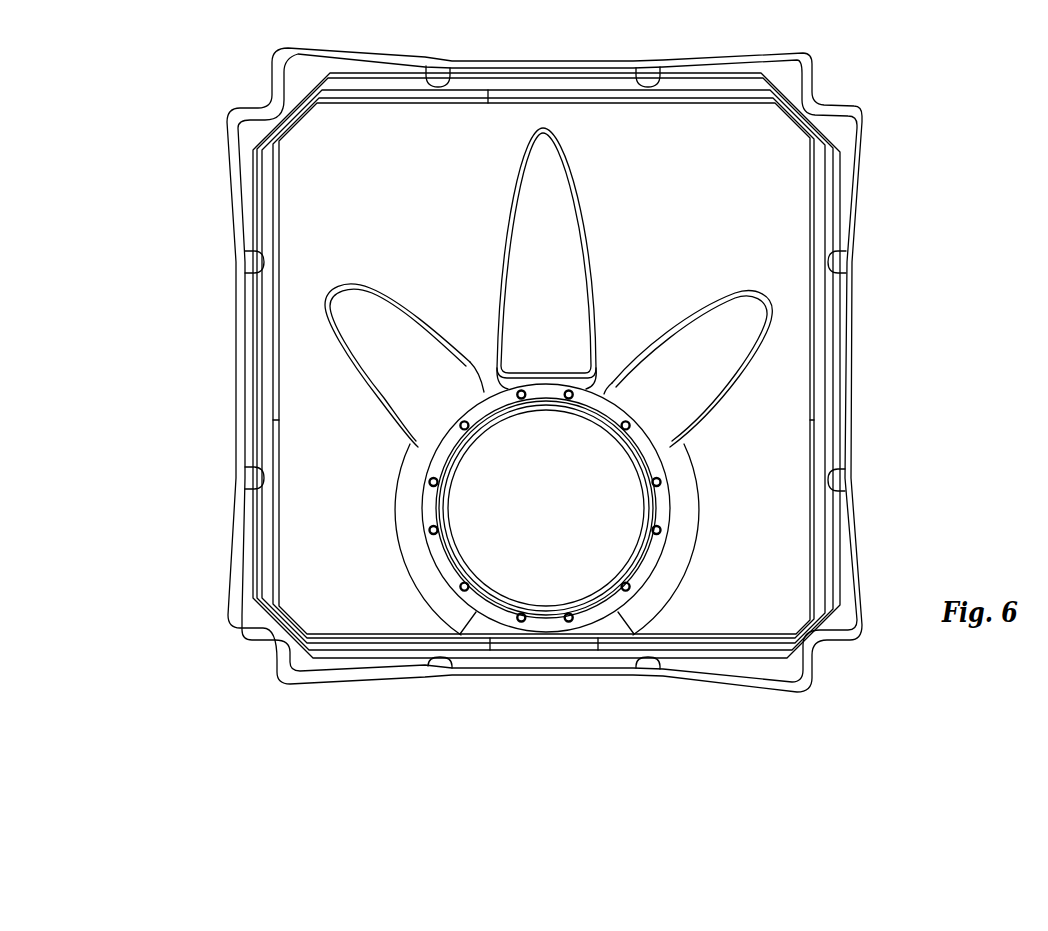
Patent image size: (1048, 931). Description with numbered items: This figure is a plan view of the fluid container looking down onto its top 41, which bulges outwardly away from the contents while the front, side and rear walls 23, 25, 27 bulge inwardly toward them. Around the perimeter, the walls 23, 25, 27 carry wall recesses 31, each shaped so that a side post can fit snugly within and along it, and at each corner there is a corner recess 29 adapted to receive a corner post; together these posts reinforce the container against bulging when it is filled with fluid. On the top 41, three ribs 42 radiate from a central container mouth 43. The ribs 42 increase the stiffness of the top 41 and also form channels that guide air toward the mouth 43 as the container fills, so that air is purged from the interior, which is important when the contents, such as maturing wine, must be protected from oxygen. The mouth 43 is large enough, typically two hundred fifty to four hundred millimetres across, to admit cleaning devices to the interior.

The front wall 23 is at (717, 692).
The side wall 25 is at (242, 380).
The rear wall 27 is at (548, 58).
The corner recess 29 is at (812, 106).
The wall recess 31 is at (441, 72).
The top 41 is at (770, 248).
The rib 42 is at (557, 210).
The container mouth 43 is at (572, 580).